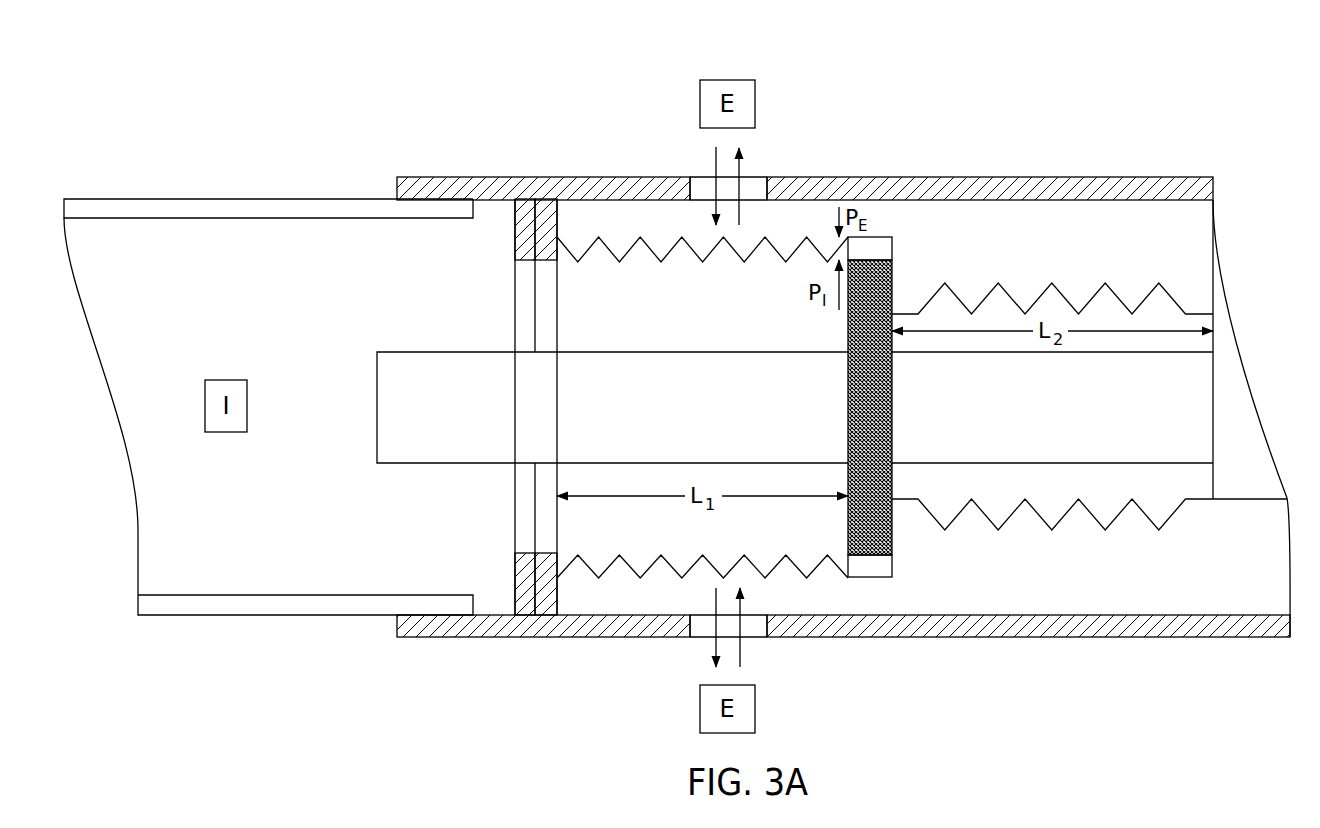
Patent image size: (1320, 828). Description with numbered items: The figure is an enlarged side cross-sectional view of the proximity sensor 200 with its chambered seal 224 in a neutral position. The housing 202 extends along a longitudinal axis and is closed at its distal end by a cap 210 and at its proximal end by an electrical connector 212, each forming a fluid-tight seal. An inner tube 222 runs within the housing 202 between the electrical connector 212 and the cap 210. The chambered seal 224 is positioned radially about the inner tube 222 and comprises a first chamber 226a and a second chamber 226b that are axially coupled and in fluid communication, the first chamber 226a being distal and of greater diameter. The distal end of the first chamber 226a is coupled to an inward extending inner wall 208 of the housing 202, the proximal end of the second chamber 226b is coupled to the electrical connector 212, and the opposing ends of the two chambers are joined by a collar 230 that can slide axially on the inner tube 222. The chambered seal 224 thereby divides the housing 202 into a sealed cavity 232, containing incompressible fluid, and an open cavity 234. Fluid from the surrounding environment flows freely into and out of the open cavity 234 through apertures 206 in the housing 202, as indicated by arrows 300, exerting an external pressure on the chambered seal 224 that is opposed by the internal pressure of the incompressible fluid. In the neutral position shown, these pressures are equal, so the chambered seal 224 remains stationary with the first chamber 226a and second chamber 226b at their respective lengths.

The proximity sensor 200 is at (372, 102).
The housing 202 is at (1031, 178).
The apertures 206 is at (752, 185).
The inner wall 208 is at (515, 240).
The cap 210 is at (262, 198).
The electrical connector 212 is at (1240, 500).
The inner tube 222 is at (612, 460).
The chambered seal 224 is at (872, 557).
The first chamber 226a is at (600, 580).
The second chamber 226b is at (958, 520).
The collar 230 is at (892, 263).
The sealed cavity 232 is at (250, 287).
The open cavity 234 is at (1072, 246).
The arrows 300 is at (713, 152).